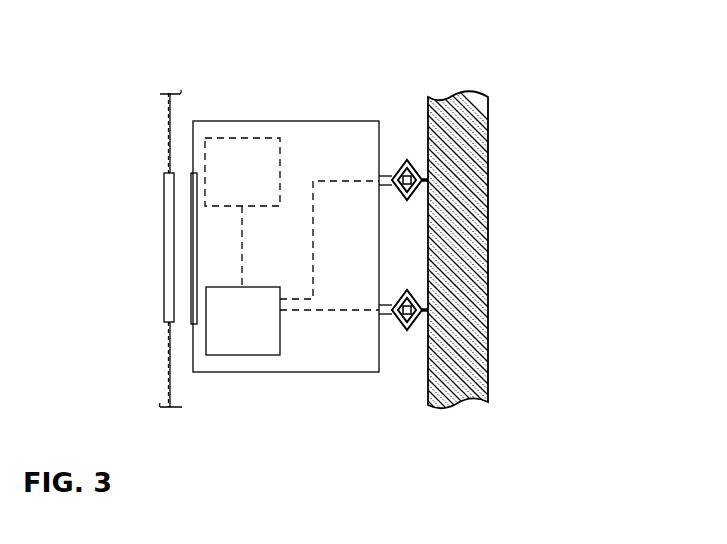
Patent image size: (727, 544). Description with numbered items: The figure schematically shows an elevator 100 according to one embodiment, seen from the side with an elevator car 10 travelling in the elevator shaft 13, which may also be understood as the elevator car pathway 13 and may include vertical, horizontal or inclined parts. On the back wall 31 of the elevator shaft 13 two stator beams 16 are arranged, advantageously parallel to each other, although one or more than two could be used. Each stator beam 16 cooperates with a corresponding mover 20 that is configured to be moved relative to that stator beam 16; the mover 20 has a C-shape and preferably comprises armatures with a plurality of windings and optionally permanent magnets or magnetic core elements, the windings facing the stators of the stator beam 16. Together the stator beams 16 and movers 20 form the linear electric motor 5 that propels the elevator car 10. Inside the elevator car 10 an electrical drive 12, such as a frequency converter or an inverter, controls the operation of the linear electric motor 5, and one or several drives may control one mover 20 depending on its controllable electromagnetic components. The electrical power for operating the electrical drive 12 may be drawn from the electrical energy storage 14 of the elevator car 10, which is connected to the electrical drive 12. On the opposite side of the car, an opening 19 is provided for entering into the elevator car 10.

The elevator 100 is at (140, 78).
The linear electric motor 5 is at (405, 357).
The elevator car 10 is at (280, 121).
The electrical drive 12 is at (232, 332).
The elevator shaft 13 is at (320, 84).
The electrical energy storage 14 is at (231, 183).
The stator beam 16 is at (400, 186).
The opening 19 is at (140, 241).
The mover 20 is at (382, 176).
The back wall 31 is at (428, 118).